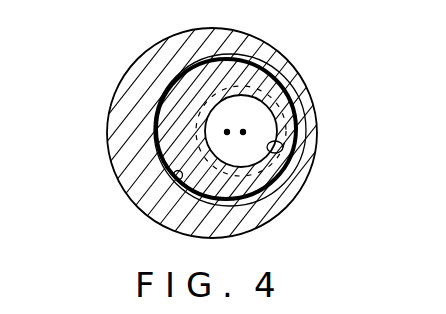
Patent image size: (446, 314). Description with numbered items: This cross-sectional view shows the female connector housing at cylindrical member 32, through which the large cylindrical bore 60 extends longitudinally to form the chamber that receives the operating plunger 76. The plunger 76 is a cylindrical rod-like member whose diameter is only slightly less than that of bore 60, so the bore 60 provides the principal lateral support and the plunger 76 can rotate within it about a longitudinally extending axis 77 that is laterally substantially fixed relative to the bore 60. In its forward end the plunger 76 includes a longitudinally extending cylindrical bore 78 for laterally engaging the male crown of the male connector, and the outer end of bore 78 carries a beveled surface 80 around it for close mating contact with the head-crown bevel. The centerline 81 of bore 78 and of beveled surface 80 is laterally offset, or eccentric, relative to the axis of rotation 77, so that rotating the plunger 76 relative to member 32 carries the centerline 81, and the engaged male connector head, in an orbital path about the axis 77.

The cylindrical member 32 is at (123, 84).
The bore 60 is at (174, 176).
The plunger 76 is at (322, 192).
The axis 77 is at (325, 53).
The cylindrical bore 78 is at (328, 148).
The beveled surface 80 is at (294, 32).
The centerline 81 is at (337, 98).